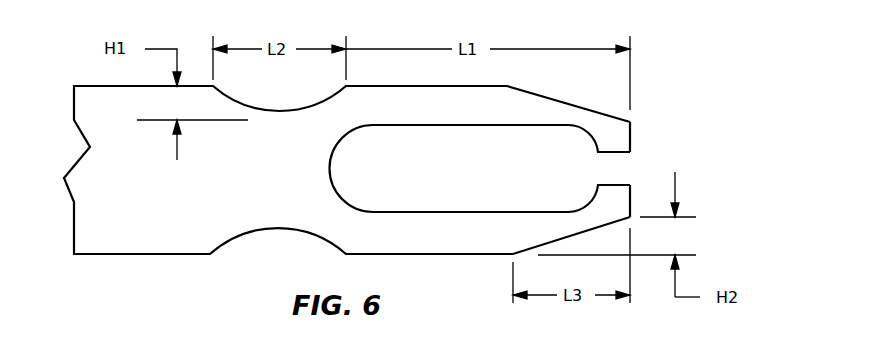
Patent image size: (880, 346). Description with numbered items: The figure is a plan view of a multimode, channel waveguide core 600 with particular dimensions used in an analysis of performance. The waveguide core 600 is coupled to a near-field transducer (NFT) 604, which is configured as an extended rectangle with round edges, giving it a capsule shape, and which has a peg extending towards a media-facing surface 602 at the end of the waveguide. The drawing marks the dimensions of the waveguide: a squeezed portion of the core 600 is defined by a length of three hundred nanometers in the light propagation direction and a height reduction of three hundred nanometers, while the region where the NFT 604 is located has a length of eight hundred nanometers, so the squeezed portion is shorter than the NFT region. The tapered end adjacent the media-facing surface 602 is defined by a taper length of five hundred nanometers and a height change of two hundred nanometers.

The waveguide core 600 is at (100, 254).
The media-facing surface 602 is at (630, 137).
The near-field transducer (NFT) 604 is at (480, 168).